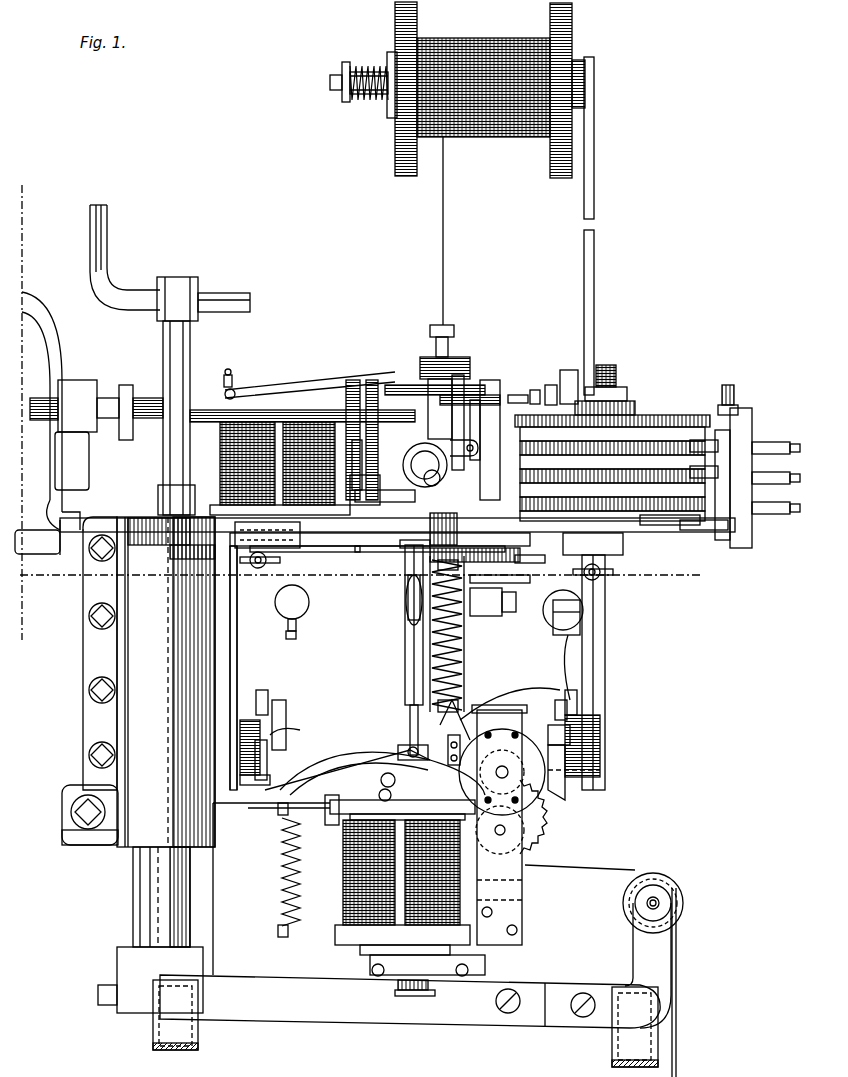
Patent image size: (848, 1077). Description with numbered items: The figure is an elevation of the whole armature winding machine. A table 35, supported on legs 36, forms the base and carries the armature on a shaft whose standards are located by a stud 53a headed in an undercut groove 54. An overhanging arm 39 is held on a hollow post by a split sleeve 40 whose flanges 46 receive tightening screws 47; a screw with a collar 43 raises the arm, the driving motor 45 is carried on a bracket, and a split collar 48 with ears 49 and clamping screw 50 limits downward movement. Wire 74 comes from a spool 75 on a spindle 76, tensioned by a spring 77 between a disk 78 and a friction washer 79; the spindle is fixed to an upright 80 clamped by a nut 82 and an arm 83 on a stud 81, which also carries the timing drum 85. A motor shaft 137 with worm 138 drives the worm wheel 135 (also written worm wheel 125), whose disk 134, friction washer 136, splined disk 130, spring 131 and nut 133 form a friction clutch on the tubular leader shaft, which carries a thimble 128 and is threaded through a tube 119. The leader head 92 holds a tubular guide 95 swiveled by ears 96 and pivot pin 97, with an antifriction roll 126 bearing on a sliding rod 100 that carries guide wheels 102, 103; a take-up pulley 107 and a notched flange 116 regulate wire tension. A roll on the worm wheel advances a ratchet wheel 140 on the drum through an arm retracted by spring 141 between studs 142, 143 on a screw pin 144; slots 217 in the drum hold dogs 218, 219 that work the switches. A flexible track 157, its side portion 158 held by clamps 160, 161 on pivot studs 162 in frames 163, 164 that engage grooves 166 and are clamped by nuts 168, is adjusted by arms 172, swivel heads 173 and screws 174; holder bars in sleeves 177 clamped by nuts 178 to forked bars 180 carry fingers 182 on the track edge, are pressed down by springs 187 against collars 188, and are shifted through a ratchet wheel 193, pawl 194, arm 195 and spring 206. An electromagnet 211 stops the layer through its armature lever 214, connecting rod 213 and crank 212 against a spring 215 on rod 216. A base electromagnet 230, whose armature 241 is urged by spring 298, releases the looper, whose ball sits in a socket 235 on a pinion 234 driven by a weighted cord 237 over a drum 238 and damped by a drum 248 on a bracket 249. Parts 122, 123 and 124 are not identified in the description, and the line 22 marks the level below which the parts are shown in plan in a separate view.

The line 22 is at (668, 594).
The table 35 is at (342, 1000).
The legs 36 is at (195, 1032).
The overhanging arm 39 is at (190, 540).
The split sleeve 40 is at (130, 678).
The collar 43 is at (160, 493).
The driving motor 45 is at (27, 300).
The flanges 46 is at (90, 656).
The screws 47 is at (89, 755).
The split collar 48 is at (135, 835).
The ears 49 is at (70, 835).
The clamping screw 50 is at (72, 812).
The stud 53a is at (412, 990).
The undercut groove 54 is at (430, 996).
The wire 74 is at (444, 245).
The spool 75 is at (498, 140).
The spindle 76 is at (368, 102).
The spring 77 is at (345, 104).
The disk 78 is at (340, 68).
The friction washer 79 is at (390, 60).
The upright 80 is at (594, 262).
The stud 81 is at (610, 365).
The nut 82 is at (626, 390).
The arm 83 is at (635, 408).
The timing drum 85 is at (680, 525).
The block or head 92 is at (502, 602).
The tubular guide 95 is at (405, 655).
The ears 96 is at (502, 588).
The pivot pin 97 is at (525, 575).
The rod 100 is at (408, 690).
The guide wheel 102 is at (384, 772).
The guide wheel 103 is at (379, 791).
The guide pulley 107 is at (470, 628).
The flange 116 is at (510, 697).
The tube 119 is at (424, 478).
The lever 122 is at (410, 750).
The pivot 123 is at (405, 748).
The arm 124 is at (395, 762).
The worm wheel 125 is at (528, 800).
The antifriction roll 126 is at (405, 628).
The thimble 128 is at (425, 357).
The disk 130 is at (495, 395).
The spring 131 is at (437, 327).
The nut 133 is at (448, 378).
The disk 134 is at (478, 400).
The worm wheel 135 is at (495, 440).
The friction washer 136 is at (360, 440).
The shaft 137 is at (222, 388).
The worm 138 is at (460, 375).
The ratchet wheel 140 is at (655, 440).
The spring 141 is at (550, 385).
The stud 142 is at (535, 390).
The stud 143 is at (575, 372).
The screw pin 144 is at (515, 395).
The track 157 is at (300, 730).
The side portion 158 is at (300, 700).
The clamp 160 is at (245, 782).
The clamp 161 is at (568, 800).
The pivot studs 162 is at (245, 755).
The frame 163 is at (268, 650).
The frame 164 is at (606, 655).
The grooves 166 is at (305, 566).
The nut 168 is at (282, 559).
The adjusting arm 172 is at (258, 697).
The swivel head 173 is at (300, 620).
The screw 174 is at (298, 636).
The sleeve 177 is at (470, 650).
The nut 178 is at (438, 545).
The forked bar 180 is at (532, 563).
The fingers 182 is at (520, 710).
The spring 187 is at (470, 668).
The collar 188 is at (456, 720).
The ratchet wheel 193 is at (481, 446).
The pawl 194 is at (425, 443).
The arm 195 is at (400, 547).
The spring 206 is at (427, 558).
The electromagnet 211 is at (222, 460).
The crank 212 is at (382, 498).
The connecting rod 213 is at (350, 380).
The armature lever 214 is at (300, 410).
The spring 215 is at (432, 400).
The rod 216 is at (372, 380).
The circumferential slots 217 is at (700, 530).
The dog 218 is at (698, 440).
The dog 219 is at (748, 445).
The electromagnet 230 is at (340, 905).
The pinion 234 is at (600, 780).
The socket 235 is at (545, 826).
The cord 237 is at (678, 1025).
The drum 238 is at (683, 885).
The armature 241 is at (528, 838).
The drum 248 is at (570, 740).
The bracket 249 is at (567, 716).
The spring 298 is at (280, 870).